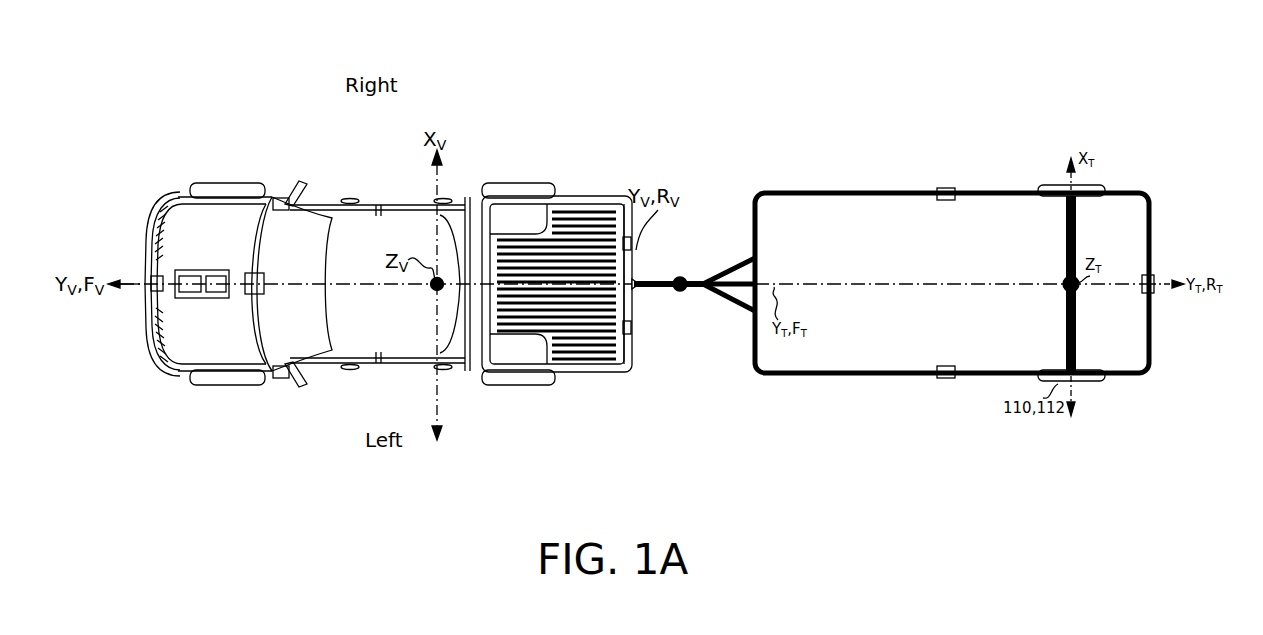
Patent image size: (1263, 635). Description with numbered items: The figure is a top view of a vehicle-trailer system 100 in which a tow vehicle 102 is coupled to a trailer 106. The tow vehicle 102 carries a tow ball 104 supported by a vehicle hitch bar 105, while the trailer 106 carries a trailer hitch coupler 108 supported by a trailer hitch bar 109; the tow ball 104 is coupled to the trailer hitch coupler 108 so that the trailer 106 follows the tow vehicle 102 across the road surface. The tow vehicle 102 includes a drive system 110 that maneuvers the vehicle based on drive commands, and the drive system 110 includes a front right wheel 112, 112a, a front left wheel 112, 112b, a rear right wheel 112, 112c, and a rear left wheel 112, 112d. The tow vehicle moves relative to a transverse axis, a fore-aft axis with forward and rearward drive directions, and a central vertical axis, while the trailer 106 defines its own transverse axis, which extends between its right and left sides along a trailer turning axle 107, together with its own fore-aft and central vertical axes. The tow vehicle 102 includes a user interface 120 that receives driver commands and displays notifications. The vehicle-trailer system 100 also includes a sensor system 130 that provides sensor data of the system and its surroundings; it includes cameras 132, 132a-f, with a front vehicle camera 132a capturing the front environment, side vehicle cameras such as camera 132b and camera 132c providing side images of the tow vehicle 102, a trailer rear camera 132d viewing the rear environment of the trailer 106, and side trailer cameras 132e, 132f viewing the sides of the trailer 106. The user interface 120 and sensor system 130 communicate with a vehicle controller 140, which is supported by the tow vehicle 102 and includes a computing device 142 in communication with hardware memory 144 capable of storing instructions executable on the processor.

The vehicle-trailer system 100 is at (650, 28).
The tow vehicle 102 is at (195, 175).
The tow ball 104 is at (688, 293).
The vehicle hitch bar 105 is at (652, 290).
The trailer 106 is at (930, 165).
The trailer turning axle 107 is at (1068, 231).
The trailer hitch coupler 108 is at (688, 278).
The trailer hitch bar 109 is at (716, 255).
The drive system 110 is at (1058, 183).
The wheel 112 is at (222, 158).
The front right wheel 112a is at (225, 190).
The front left wheel 112b is at (225, 384).
The rear right wheel 112c is at (517, 190).
The rear left wheel 112d is at (521, 384).
The user interface 120 is at (265, 271).
The sensor system 130 is at (636, 335).
The camera 132 is at (922, 219).
The front vehicle camera 132a is at (150, 275).
The vehicle camera 132b is at (288, 195).
The side vehicle camera 132c is at (288, 384).
The trailer rear camera 132d is at (1153, 293).
The side trailer camera 132e is at (948, 202).
The side trailer camera 132f is at (948, 380).
The vehicle controller 140 is at (200, 268).
The computing device 142 is at (190, 299).
The hardware memory 144 is at (216, 299).